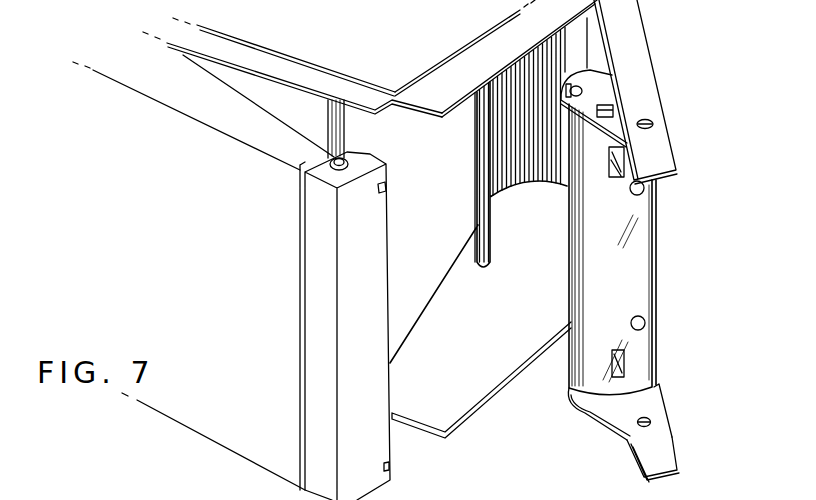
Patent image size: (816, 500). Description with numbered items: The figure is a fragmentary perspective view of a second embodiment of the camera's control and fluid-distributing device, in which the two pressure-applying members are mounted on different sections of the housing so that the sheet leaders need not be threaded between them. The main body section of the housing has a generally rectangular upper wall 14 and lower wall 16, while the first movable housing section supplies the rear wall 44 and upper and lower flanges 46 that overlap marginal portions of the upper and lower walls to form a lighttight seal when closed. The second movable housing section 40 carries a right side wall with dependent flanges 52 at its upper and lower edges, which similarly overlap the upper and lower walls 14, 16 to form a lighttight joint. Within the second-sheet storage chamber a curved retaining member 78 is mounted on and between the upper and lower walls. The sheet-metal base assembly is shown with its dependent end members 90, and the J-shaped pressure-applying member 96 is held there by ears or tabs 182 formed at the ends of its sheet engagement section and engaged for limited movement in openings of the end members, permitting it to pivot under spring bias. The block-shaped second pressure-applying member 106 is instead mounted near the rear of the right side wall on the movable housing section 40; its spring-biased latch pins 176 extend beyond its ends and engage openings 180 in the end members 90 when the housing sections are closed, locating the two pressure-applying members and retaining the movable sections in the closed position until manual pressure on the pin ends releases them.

The upper wall 14 is at (504, 61).
The lower wall 16 is at (477, 392).
The second movable housing section 40 is at (661, 41).
The rear wall 44 is at (245, 297).
The upper and lower flanges 46 is at (260, 114).
The dependent flanges 52 is at (667, 459).
The curved retaining member 78 is at (534, 157).
The end members 90 is at (602, 87).
The pressure-applying member 96 is at (585, 258).
The second pressure-applying member 106 is at (386, 446).
The latch pins 176 is at (295, 163).
The openings 180 is at (653, 123).
The tabs 182 is at (614, 111).